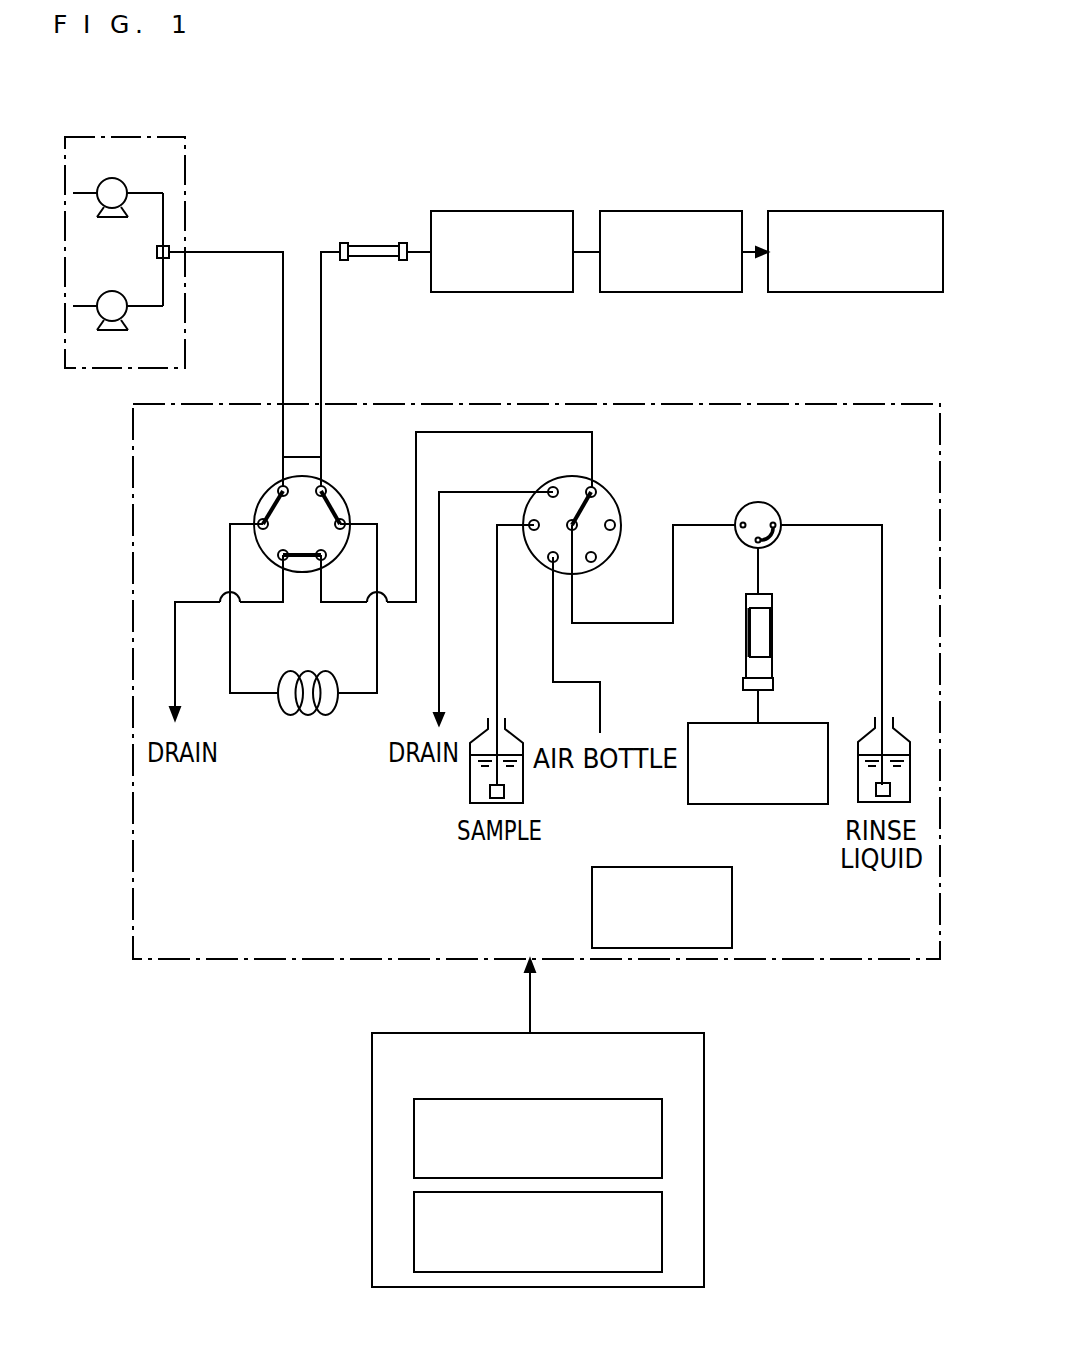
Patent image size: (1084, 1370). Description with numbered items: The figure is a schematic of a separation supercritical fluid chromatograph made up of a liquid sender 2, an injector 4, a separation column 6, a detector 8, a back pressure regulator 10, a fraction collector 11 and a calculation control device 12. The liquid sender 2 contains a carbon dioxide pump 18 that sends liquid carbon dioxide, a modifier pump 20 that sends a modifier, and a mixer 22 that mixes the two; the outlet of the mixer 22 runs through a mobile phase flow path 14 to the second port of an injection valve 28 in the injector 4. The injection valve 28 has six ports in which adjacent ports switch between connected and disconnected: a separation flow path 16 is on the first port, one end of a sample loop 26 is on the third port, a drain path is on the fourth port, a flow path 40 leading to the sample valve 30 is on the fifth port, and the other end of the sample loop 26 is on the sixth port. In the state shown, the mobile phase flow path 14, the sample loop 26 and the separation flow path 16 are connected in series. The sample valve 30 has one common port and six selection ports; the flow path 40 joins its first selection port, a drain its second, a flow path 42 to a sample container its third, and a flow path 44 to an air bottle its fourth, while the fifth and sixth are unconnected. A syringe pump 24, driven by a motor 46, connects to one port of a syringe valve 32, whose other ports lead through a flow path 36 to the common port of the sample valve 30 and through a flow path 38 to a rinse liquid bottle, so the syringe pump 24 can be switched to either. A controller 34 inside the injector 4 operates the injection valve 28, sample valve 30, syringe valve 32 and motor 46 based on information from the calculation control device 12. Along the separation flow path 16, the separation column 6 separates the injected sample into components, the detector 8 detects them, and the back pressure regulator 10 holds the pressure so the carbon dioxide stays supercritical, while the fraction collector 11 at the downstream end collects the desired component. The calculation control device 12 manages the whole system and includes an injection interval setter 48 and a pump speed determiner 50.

The liquid sender 2 is at (135, 135).
The injector 4 is at (133, 597).
The separation column 6 is at (372, 245).
The detector 8 is at (507, 211).
The back pressure regulator 10 is at (685, 211).
The fraction collector 11 is at (870, 211).
The calculation control device 12 is at (704, 1063).
The mobile phase flow path 14 is at (252, 250).
The separation flow path 16 is at (327, 247).
The carbon dioxide pump 18 is at (98, 213).
The modifier pump 20 is at (105, 293).
The mixer 22 is at (173, 243).
The syringe pump 24 is at (772, 635).
The sample loop 26 is at (296, 715).
The injection valve 28 is at (258, 497).
The sample valve 30 is at (610, 487).
The syringe valve 32 is at (762, 500).
The controller 34 is at (732, 896).
The flow path 36 is at (637, 625).
The flow path 38 is at (852, 523).
The flow path 40 is at (460, 433).
The flow path 42 is at (497, 627).
The flow path 44 is at (573, 683).
The motor 46 is at (777, 805).
The injection interval setter 48 is at (663, 1130).
The pump speed determiner 50 is at (663, 1230).